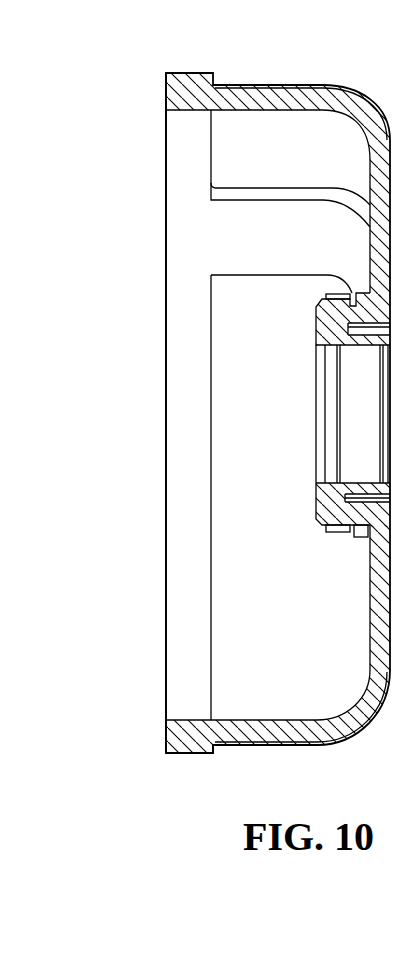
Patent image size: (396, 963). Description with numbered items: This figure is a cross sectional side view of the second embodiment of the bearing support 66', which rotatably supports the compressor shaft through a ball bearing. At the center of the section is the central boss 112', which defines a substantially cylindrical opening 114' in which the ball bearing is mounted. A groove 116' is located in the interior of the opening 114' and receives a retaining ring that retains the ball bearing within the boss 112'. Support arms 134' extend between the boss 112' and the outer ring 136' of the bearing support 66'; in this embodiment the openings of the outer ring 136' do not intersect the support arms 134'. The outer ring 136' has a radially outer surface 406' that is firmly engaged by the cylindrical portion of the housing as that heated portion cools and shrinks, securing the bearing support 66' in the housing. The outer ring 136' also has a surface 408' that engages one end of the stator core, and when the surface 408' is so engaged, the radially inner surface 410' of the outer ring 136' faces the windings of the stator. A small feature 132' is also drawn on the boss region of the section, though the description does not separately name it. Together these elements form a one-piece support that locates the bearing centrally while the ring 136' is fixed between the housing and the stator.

The bearing support 66' is at (226, 396).
The support arms 134' is at (301, 412).
The surface 408' is at (109, 413).
The radially inner surface 410' is at (224, 200).
The outer ring 136' is at (216, 497).
The groove 116' is at (317, 414).
The cylindrical opening 114' is at (287, 414).
The central boss 112' is at (320, 510).
The lug 132' is at (340, 552).
The radially outer surface 406' is at (247, 658).